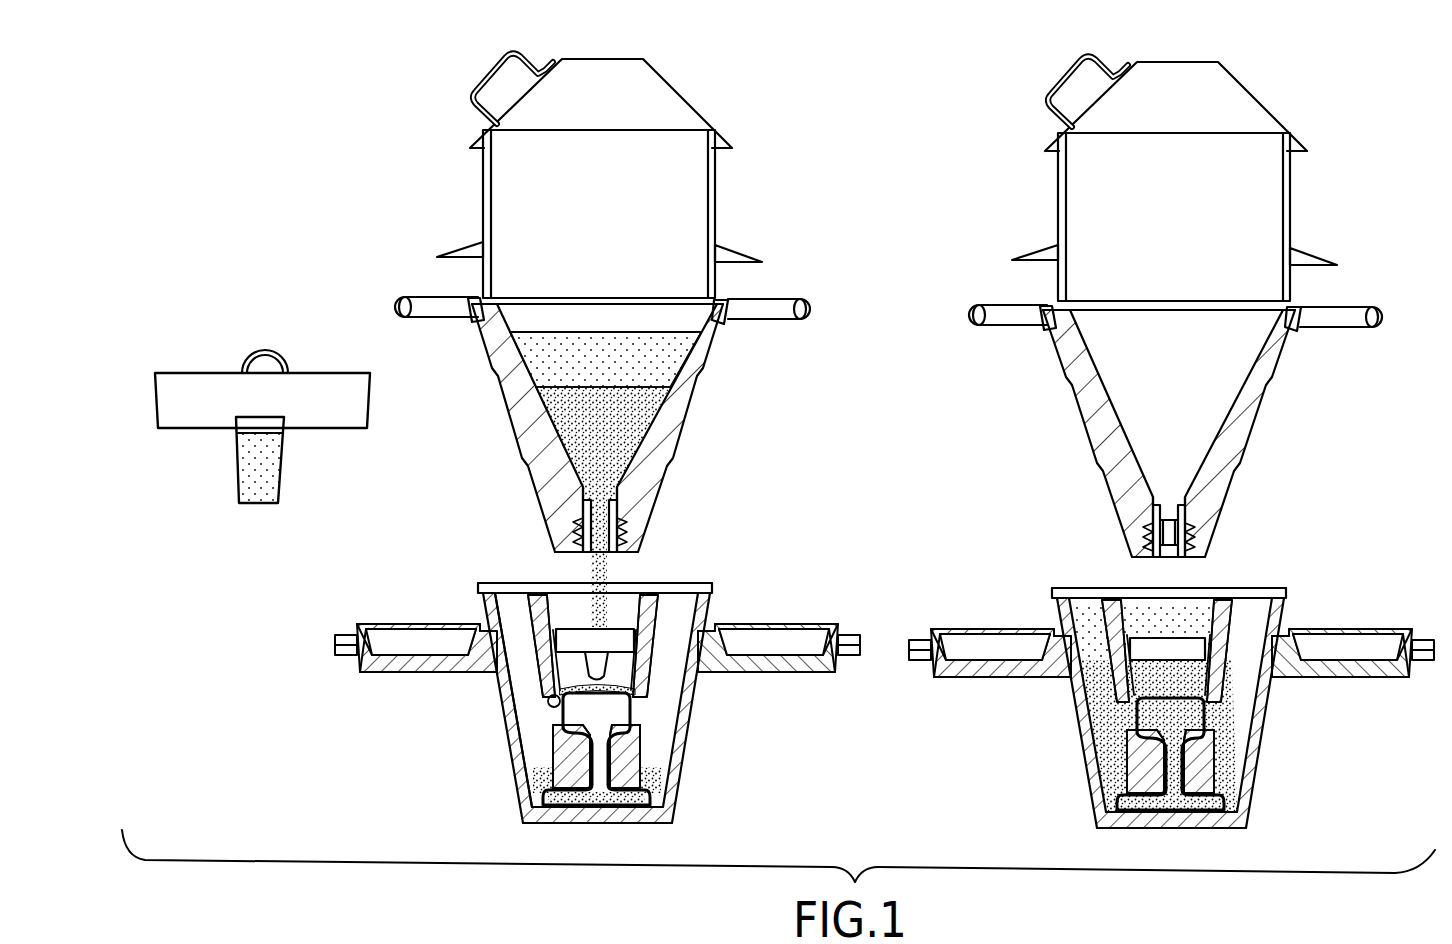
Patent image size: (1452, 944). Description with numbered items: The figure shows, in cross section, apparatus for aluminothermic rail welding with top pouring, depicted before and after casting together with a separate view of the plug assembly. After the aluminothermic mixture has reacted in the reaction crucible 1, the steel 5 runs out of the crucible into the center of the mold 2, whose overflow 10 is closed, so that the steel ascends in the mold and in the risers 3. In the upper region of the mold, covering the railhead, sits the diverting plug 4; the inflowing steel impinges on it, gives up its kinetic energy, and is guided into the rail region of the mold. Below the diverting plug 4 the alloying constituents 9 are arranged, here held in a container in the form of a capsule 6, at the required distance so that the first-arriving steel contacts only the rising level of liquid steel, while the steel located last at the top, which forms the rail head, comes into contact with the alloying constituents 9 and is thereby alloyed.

The reaction crucible 1 is at (650, 358).
The mold 2 is at (527, 798).
The risers 3 is at (537, 710).
The diverting plug 4 is at (580, 640).
The steel 5 is at (615, 436).
The capsule 6 is at (593, 667).
The alloying constituents 9 is at (257, 468).
The overflow 10 is at (641, 713).